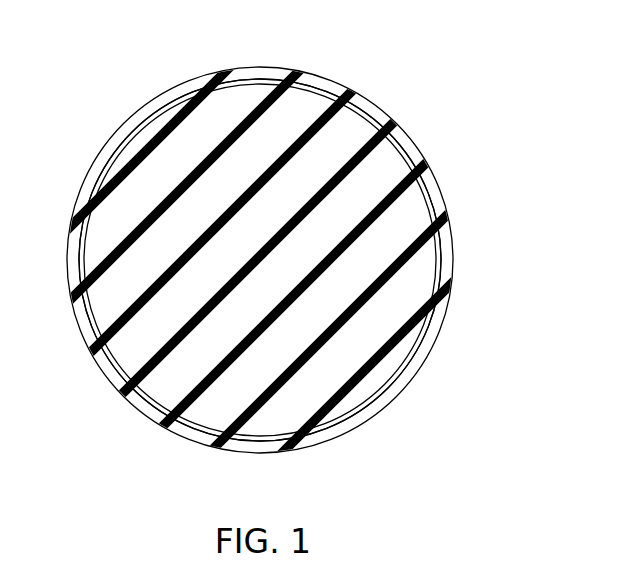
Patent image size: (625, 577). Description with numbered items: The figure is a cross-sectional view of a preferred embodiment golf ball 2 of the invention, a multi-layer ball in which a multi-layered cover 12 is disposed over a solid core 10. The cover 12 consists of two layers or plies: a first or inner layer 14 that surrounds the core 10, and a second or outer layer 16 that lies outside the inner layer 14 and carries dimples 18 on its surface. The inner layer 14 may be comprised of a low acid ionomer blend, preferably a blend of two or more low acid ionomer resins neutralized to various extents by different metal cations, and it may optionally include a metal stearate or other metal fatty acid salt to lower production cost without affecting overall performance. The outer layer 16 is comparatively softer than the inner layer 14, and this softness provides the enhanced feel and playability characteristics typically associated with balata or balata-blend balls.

The golf ball 2 is at (312, 288).
The core 10 is at (138, 328).
The cover 12 is at (165, 430).
The inner layer 14 is at (148, 142).
The outer layer 16 is at (445, 203).
The dimples 18 is at (357, 90).